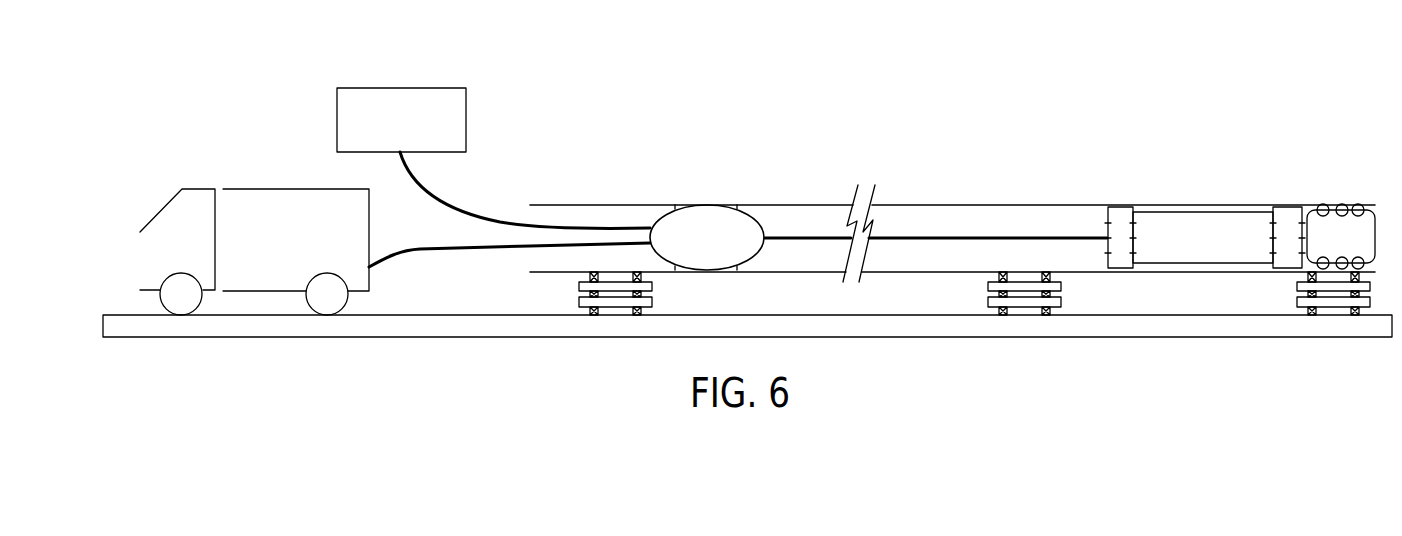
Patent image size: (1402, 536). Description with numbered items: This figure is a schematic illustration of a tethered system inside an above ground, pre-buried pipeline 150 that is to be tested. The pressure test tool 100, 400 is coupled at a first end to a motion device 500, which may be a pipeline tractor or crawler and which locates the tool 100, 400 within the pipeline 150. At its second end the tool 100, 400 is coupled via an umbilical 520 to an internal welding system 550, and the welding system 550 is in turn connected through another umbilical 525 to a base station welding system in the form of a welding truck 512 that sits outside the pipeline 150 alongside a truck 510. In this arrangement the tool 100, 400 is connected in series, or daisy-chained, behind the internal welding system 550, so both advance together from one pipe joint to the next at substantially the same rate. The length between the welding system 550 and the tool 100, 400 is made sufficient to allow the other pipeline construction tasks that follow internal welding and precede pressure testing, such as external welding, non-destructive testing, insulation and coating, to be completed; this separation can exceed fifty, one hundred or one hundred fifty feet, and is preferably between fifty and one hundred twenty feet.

The truck 510 is at (263, 203).
The welding truck 512 is at (348, 88).
The umbilical 520 is at (390, 247).
The umbilical 525 is at (493, 217).
The above ground pipeline 150 is at (597, 205).
The internal welding system 550 is at (708, 222).
The tool 100 is at (1205, 196).
The tool 400 is at (1170, 223).
The motion device 500 is at (1347, 232).